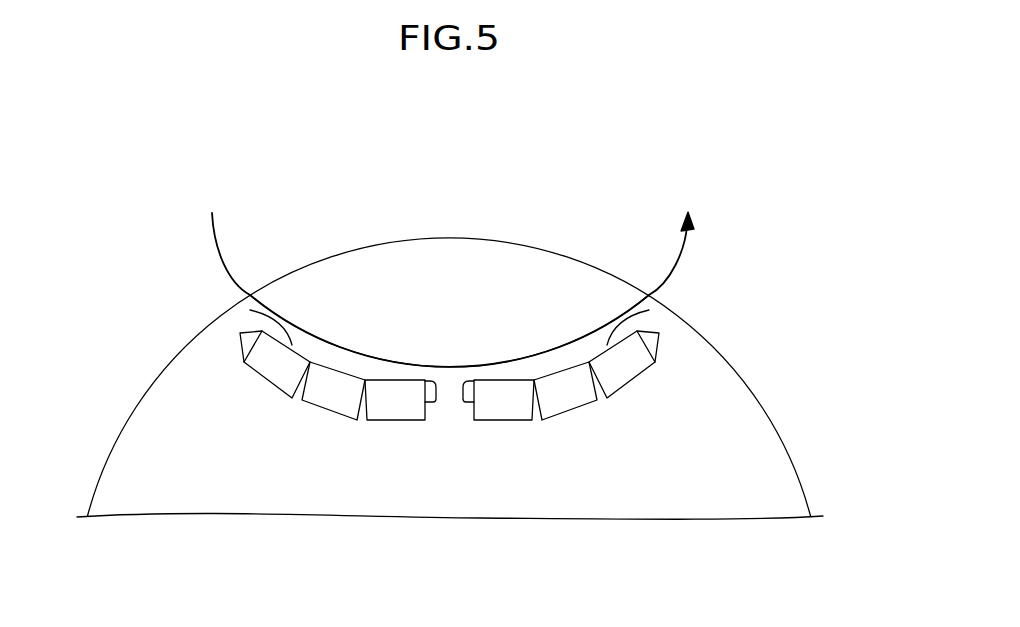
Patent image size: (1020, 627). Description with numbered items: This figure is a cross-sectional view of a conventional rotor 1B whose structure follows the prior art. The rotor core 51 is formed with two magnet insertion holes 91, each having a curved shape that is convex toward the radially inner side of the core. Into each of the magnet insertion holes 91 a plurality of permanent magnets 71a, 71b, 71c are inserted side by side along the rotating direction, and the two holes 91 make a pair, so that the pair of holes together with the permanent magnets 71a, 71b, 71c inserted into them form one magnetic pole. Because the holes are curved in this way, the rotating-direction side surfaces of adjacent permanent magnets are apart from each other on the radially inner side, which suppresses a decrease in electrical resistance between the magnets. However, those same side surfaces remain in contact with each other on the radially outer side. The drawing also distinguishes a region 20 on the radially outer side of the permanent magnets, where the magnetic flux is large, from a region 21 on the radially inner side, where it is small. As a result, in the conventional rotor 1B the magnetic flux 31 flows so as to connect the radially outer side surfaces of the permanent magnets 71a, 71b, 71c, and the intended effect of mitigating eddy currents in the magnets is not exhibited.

The rotor 1B is at (583, 156).
The region on the radially outer side of the permanent magnets 20 is at (447, 263).
The region on the radially inner side of the permanent magnets 21 is at (452, 492).
The magnetic flux 31 is at (373, 357).
The rotor core 51 is at (532, 249).
The magnet insertion holes 91 is at (250, 310).
The permanent magnet 71a is at (268, 372).
The permanent magnet 71b is at (330, 397).
The permanent magnet 71c is at (395, 413).